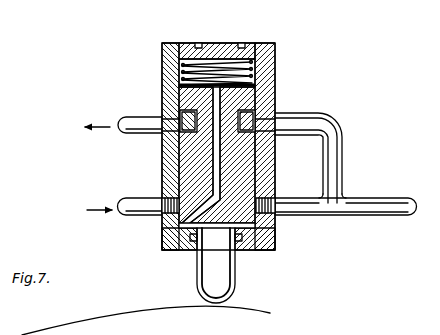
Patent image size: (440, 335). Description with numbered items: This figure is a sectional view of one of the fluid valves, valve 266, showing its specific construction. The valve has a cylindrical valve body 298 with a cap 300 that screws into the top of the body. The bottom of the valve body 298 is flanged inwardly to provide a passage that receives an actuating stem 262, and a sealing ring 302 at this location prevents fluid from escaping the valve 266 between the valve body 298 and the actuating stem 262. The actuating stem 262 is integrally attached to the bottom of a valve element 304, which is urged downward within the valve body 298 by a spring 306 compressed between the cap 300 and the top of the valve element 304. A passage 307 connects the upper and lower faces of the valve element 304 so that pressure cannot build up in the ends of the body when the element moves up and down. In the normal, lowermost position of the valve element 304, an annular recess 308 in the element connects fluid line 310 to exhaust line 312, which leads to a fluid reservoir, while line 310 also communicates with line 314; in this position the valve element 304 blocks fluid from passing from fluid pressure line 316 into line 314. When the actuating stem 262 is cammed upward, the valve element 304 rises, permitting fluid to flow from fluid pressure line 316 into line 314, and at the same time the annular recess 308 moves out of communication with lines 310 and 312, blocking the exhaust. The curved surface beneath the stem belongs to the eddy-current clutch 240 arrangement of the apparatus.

The cap 300 is at (214, 43).
The valve 266 is at (274, 92).
The valve body 298 is at (170, 90).
The spring 306 is at (252, 68).
The valve element 304 is at (242, 176).
The passage 307 is at (216, 169).
The sealing ring 302 is at (196, 247).
The actuating stem 262 is at (218, 268).
The exhaust line 312 is at (137, 133).
The fluid pressure line 316 is at (140, 215).
The annular recess 308 is at (272, 106).
The fluid line 310 is at (297, 122).
The line 314 is at (378, 202).
The eddy-current clutch 240 is at (264, 308).